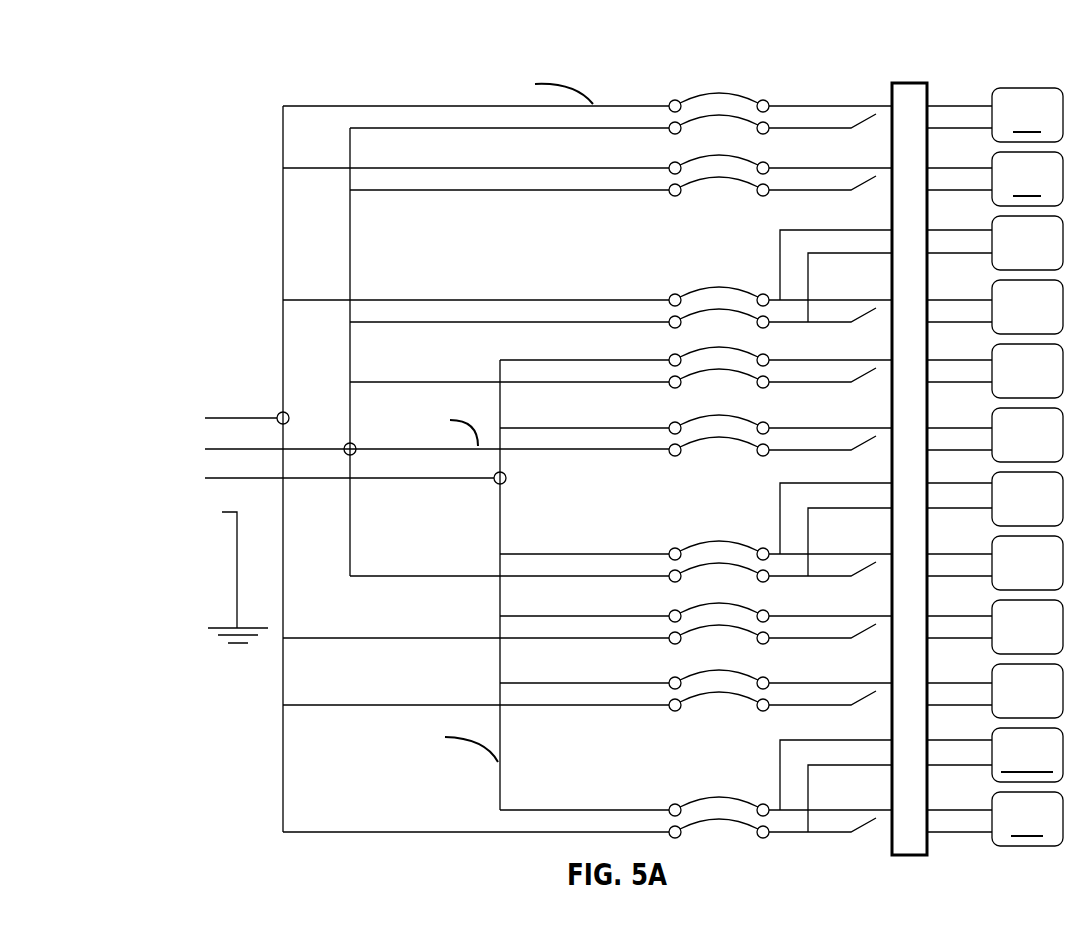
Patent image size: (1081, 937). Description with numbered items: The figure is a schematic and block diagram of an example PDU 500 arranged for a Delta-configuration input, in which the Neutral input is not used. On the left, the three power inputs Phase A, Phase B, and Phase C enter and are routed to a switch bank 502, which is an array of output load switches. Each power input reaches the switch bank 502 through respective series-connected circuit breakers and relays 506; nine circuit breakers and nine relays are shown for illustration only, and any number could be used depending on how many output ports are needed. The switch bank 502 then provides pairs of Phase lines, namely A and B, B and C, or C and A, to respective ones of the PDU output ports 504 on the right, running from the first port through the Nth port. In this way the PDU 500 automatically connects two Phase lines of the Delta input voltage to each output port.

The PDU 500 is at (420, 54).
The switch bank 502 is at (904, 78).
The PDU output ports 504 is at (1036, 74).
The series-connected circuit breakers and relays 506 is at (746, 76).